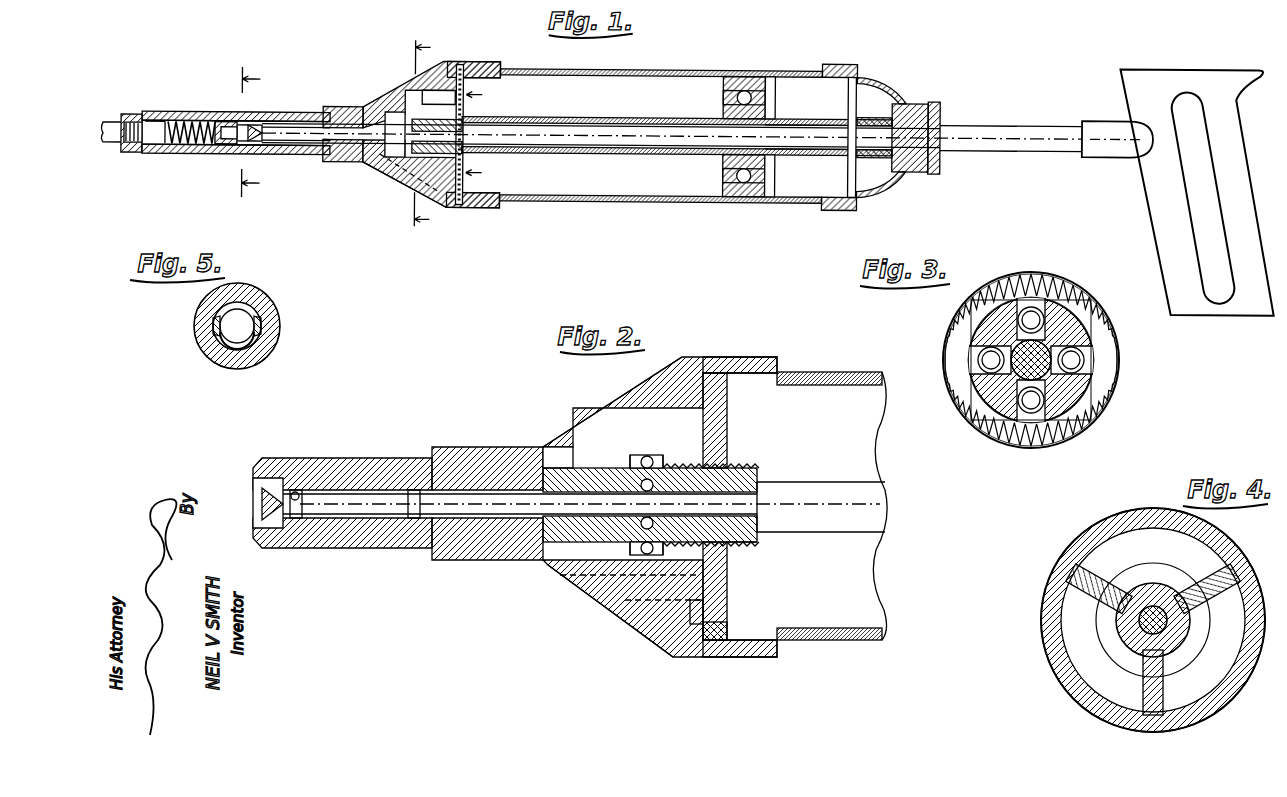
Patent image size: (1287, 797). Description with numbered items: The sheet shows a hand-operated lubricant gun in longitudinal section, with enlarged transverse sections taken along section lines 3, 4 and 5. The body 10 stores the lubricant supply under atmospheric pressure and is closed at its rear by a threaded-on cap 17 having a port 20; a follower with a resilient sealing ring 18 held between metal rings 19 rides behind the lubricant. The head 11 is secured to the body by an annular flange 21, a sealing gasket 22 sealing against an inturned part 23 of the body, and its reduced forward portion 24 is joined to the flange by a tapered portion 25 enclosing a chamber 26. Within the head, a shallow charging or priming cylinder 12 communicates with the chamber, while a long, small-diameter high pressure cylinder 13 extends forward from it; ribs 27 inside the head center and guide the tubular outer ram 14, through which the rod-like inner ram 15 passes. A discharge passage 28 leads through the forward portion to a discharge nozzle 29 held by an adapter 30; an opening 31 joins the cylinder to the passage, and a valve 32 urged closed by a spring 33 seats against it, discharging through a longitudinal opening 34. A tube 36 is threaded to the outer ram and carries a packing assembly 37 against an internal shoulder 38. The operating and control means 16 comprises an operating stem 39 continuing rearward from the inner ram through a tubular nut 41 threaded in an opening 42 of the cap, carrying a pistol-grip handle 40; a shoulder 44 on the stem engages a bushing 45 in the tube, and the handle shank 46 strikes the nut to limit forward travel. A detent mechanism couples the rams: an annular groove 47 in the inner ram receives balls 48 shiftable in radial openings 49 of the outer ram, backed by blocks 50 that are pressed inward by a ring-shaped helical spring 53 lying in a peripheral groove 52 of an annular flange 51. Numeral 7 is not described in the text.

In FIG. 1, the section line 3— 3 is at (483, 134).
In FIG. 1, the section line 4— 4 is at (428, 138).
In FIG. 1, the section line 5— 5 is at (266, 130).
In FIG. 1, the ball bearing 7 is at (745, 72).
In FIG. 1, the body 10 is at (660, 66).
In FIG. 1, the head 11 is at (395, 82).
In FIG. 2, the head 11 is at (625, 388).
In FIG. 1, the charging or priming cylinder 12 is at (388, 112).
In FIG. 2, the charging or priming cylinder 12 is at (552, 465).
In FIG. 1, the ejecting or high pressure cylinder 13 is at (352, 142).
In FIG. 2, the ejecting or high pressure cylinder 13 is at (456, 492).
In FIG. 2, the outer ram 14 is at (613, 468).
In FIG. 3, the outer ram 14 is at (1019, 383).
In FIG. 4, the outer ram 14 is at (1130, 620).
In FIG. 1, the inner ram 15 is at (588, 123).
In FIG. 2, the inner ram 15 is at (578, 492).
In FIG. 3, the inner ram 15 is at (983, 391).
In FIG. 4, the inner ram 15 is at (1154, 586).
In FIG. 1, the operating and control means 16 is at (456, 108).
In FIG. 2, the operating and control means 16 is at (648, 456).
In FIG. 3, the operating and control means 16 is at (1031, 387).
In FIG. 1, the cap 17 is at (890, 92).
In FIG. 1, the resilient sealing ring 18 is at (748, 192).
In FIG. 1, the metal rings 19 is at (771, 160).
In FIG. 1, the port 20 is at (900, 176).
In FIG. 1, the annular apron or flange 21 is at (475, 62).
In FIG. 2, the annular apron or flange 21 is at (755, 660).
In FIG. 2, the sealing gasket 22 is at (710, 612).
In FIG. 2, the inturned part 23 is at (714, 630).
In FIG. 1, the forward portion of the head 24 is at (205, 153).
In FIG. 2, the forward portion of the head 24 is at (335, 470).
In FIG. 5, the forward portion of the head 24 is at (254, 326).
In FIG. 1, the tapered portion 25 is at (420, 176).
In FIG. 2, the tapered portion 25 is at (590, 410).
In FIG. 4, the tapered portion 25 is at (1132, 620).
In FIG. 2, the chamber 26 is at (712, 418).
In FIG. 2, the ribs 27 is at (600, 610).
In FIG. 4, the ribs 27 is at (1153, 639).
In FIG. 1, the discharge passage 28 is at (185, 121).
In FIG. 5, the discharge passage 28 is at (267, 350).
In FIG. 1, the discharge nozzle 29 is at (110, 120).
In FIG. 1, the coupling or adapter 30 is at (132, 114).
In FIG. 1, the opening 31 is at (262, 142).
In FIG. 2, the opening 31 is at (297, 490).
In FIG. 1, the valve 32 is at (256, 124).
In FIG. 2, the valve 32 is at (275, 483).
In FIG. 5, the valve 32 is at (267, 329).
In FIG. 1, the spring 33 is at (175, 153).
In FIG. 1, the longitudinal opening 34 is at (225, 121).
In FIG. 5, the longitudinal opening 34 is at (264, 323).
In FIG. 1, the tube 36 is at (818, 116).
In FIG. 2, the tube 36 is at (790, 474).
In FIG. 2, the packing assembly 37 is at (735, 542).
In FIG. 2, the internal shoulder 38 is at (735, 470).
In FIG. 1, the operating stem 39 is at (790, 128).
In FIG. 2, the operating stem 39 is at (821, 507).
In FIG. 1, the operating handle 40 is at (1160, 190).
In FIG. 1, the tubular bushing or nut 41 is at (940, 110).
In FIG. 1, the opening 42 is at (918, 100).
In FIG. 1, the annular shoulder 44 is at (880, 114).
In FIG. 1, the tubular nut or bushing 45 is at (880, 150).
In FIG. 1, the shank 46 is at (1110, 150).
In FIG. 2, the annular groove 47 is at (414, 490).
In FIG. 3, the annular groove 47 is at (1032, 356).
In FIG. 3, the balls 48 is at (1108, 360).
In FIG. 3, the radial openings 49 is at (1088, 332).
In FIG. 3, the followers or blocks 50 is at (1031, 432).
In FIG. 2, the annular flange 51 is at (660, 461).
In FIG. 3, the annular flange 51 is at (1063, 367).
In FIG. 2, the peripheral annular groove 52 is at (660, 550).
In FIG. 3, the peripheral annular groove 52 is at (1052, 360).
In FIG. 3, the helical spring 53 is at (1068, 372).